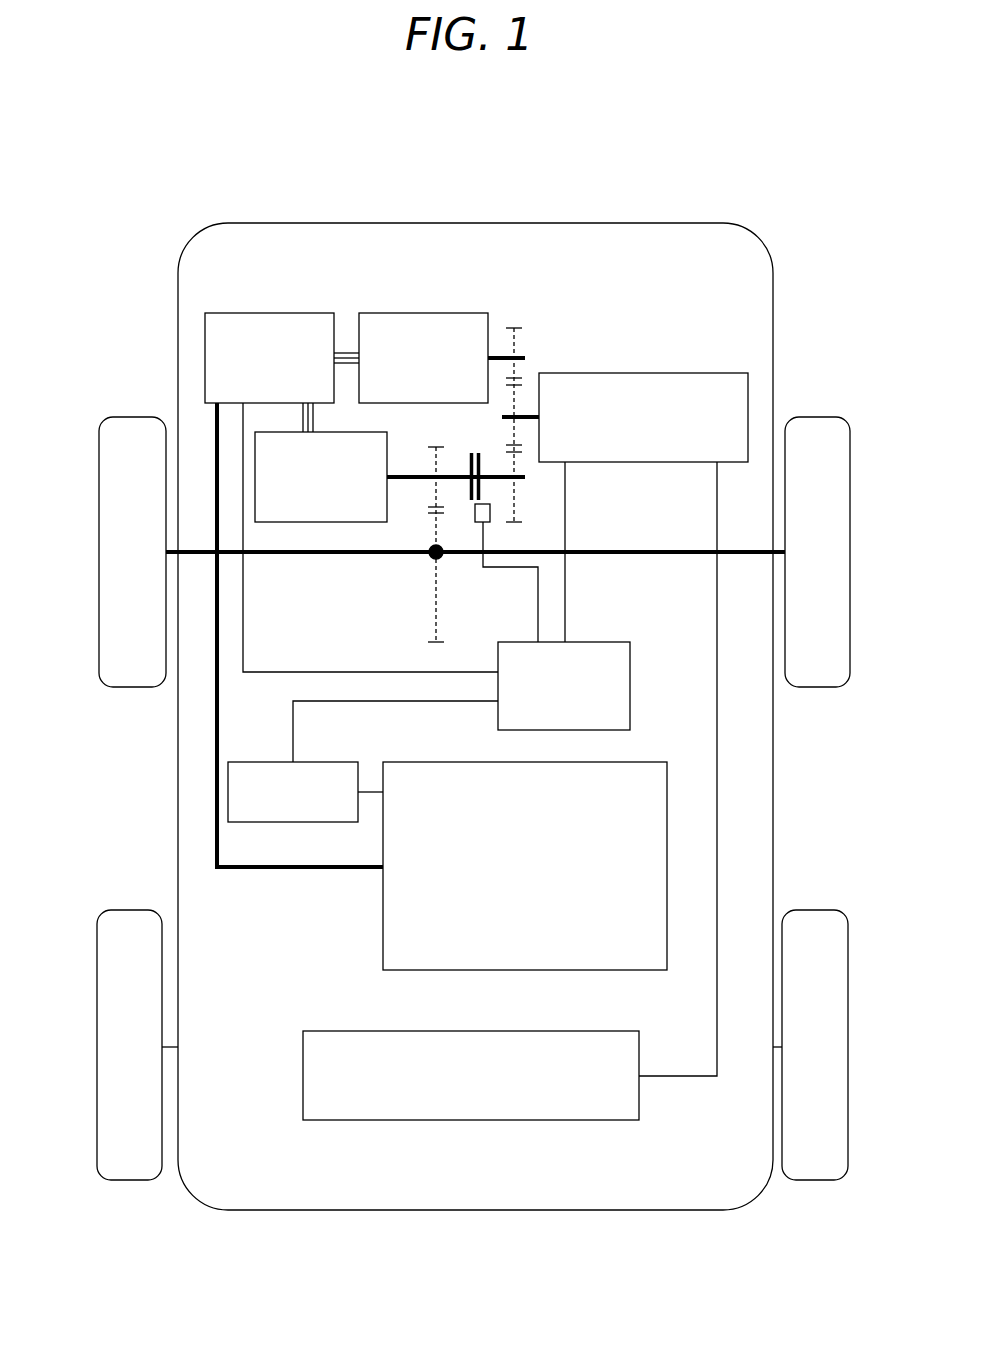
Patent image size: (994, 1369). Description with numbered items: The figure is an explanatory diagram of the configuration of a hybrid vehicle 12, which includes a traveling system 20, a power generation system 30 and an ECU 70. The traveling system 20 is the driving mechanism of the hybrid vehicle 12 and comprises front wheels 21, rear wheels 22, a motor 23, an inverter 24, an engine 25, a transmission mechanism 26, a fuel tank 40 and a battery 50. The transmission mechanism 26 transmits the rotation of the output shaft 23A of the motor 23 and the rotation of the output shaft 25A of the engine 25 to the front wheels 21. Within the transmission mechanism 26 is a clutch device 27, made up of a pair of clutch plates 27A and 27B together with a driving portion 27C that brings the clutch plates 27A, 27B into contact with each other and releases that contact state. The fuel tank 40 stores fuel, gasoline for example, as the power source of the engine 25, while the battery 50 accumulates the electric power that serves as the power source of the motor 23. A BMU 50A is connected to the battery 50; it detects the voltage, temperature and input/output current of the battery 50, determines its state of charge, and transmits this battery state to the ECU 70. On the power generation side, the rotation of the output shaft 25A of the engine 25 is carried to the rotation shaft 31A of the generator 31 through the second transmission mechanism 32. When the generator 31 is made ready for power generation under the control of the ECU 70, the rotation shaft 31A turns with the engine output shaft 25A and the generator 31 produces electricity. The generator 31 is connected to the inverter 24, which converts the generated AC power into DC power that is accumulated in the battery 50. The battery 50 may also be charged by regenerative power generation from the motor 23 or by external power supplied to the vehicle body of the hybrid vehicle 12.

The hybrid vehicle 12 is at (575, 192).
The traveling system 20 is at (784, 289).
The front wheels 21 is at (133, 417).
The rear wheels 22 is at (132, 910).
The power generation system 30 is at (276, 274).
The inverter 24 is at (242, 312).
The generator 31 is at (381, 313).
The rotation shaft 31A is at (499, 354).
The second transmission mechanism 32 is at (522, 375).
The motor 23 is at (294, 524).
The output shaft 23A is at (404, 482).
The engine 25 is at (703, 373).
The output shaft 25A is at (525, 415).
The transmission mechanism 26 is at (514, 496).
The clutch device 27 is at (465, 530).
The clutch plate 27A is at (485, 464).
The clutch plate 27B is at (468, 466).
The driving portion 27C is at (490, 520).
The ECU 70 is at (616, 642).
The BMU 50A is at (252, 762).
The battery 50 is at (383, 922).
The fuel tank 40 is at (357, 1120).